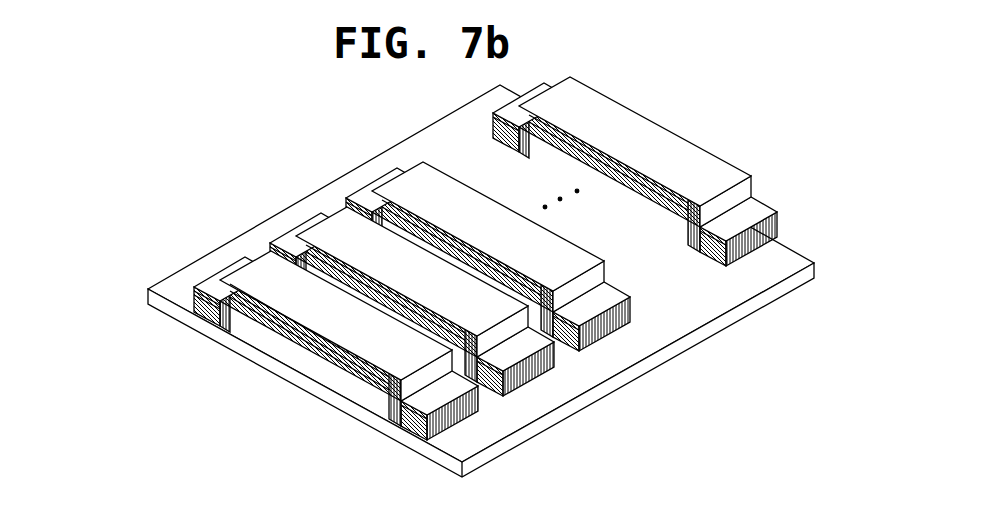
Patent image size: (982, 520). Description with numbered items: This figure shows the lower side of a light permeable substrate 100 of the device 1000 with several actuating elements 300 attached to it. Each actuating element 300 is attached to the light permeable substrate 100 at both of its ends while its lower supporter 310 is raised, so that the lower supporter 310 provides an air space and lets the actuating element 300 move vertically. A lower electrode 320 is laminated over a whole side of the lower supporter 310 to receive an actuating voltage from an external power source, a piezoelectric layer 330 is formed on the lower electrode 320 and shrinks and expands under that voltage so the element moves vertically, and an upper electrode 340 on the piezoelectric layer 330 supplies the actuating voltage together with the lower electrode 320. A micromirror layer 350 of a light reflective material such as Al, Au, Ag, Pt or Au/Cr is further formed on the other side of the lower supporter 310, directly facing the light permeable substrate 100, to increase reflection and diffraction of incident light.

The semiconductor device 1000 is at (203, 143).
The light permeable substrate 100 is at (256, 358).
The actuating element 300 is at (87, 242).
The lower supporter 310 is at (207, 309).
The lower electrode 320 is at (195, 298).
The piezoelectric layer 330 is at (206, 300).
The upper electrode 340 is at (200, 291).
The micromirror layer 350 is at (255, 327).